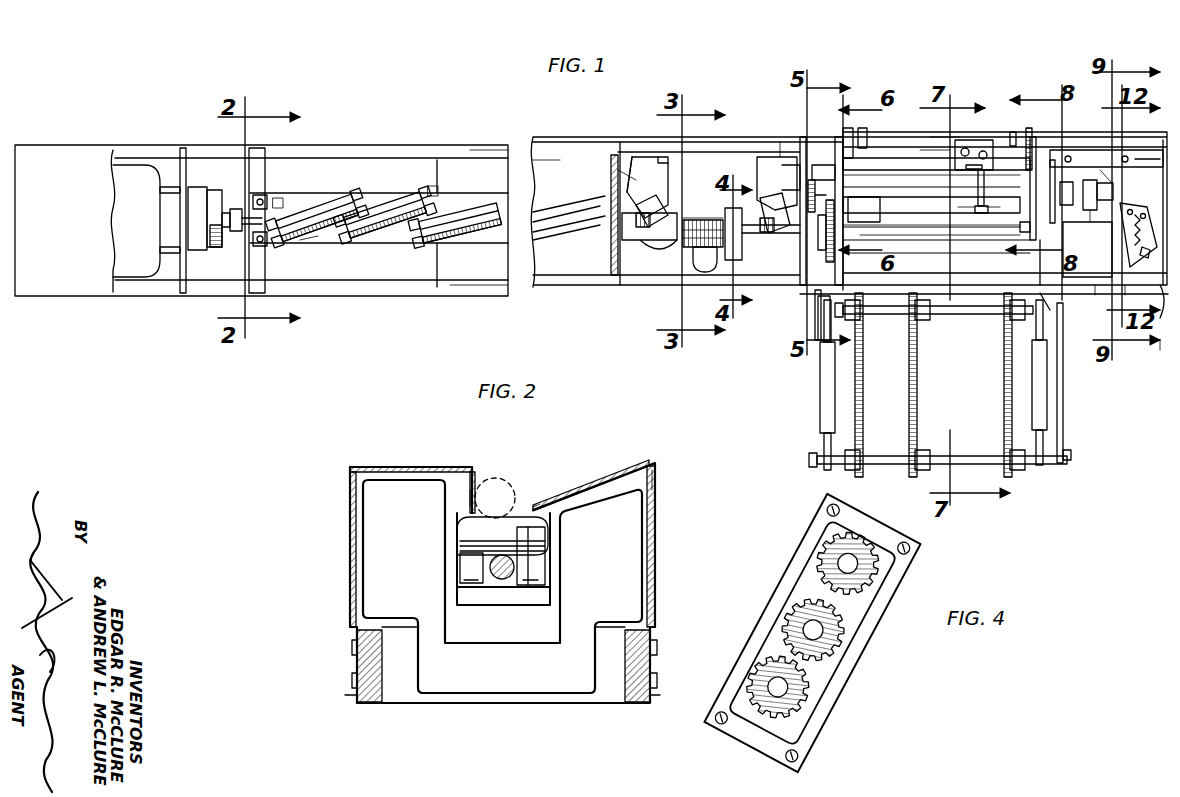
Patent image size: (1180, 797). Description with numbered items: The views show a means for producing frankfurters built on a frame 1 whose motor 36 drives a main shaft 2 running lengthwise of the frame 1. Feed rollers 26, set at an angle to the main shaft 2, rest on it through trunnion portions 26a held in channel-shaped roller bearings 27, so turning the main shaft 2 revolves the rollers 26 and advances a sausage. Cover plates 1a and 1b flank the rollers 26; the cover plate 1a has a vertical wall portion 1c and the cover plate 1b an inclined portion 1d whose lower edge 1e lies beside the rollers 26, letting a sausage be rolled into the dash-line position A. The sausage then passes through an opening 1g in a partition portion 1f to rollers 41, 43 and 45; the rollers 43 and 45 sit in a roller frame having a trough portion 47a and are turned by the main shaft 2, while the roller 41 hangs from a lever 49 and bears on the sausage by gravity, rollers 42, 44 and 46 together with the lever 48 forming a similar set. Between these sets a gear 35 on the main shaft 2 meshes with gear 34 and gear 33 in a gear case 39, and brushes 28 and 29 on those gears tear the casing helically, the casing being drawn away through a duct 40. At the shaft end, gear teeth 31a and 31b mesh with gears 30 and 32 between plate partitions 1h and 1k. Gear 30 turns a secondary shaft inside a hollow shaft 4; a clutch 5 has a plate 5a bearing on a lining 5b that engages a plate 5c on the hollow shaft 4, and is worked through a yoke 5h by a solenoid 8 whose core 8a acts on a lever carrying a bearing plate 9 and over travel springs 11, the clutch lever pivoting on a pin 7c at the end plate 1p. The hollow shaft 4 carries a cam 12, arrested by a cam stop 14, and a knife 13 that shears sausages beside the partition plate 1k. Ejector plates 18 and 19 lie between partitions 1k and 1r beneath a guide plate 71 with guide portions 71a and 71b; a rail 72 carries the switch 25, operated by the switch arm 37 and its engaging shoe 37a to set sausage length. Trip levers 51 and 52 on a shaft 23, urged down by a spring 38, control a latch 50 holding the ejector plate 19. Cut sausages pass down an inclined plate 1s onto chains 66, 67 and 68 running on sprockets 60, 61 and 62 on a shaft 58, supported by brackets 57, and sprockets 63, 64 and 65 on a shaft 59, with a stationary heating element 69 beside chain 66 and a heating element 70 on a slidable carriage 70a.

In FIG. 1, the frame 1 is at (392, 283).
In FIG. 2, the frame 1 is at (355, 667).
In FIG. 1, the cover plate 1a is at (482, 157).
In FIG. 2, the cover plate 1a is at (385, 465).
In FIG. 2, the cover plate 1b is at (645, 470).
In FIG. 2, the vertical wall portion 1c is at (470, 495).
In FIG. 1, the inclined portion 1d is at (470, 265).
In FIG. 2, the inclined portion 1d is at (575, 493).
In FIG. 2, the lower edge 1e is at (535, 510).
In FIG. 1, the partition portion 1f is at (613, 257).
In FIG. 1, the opening 1g is at (608, 182).
In FIG. 1, the plate partition 1h is at (797, 185).
In FIG. 1, the plate partition 1k is at (838, 170).
In FIG. 1, the end plate 1p is at (1162, 310).
In FIG. 1, the plate portion 1r is at (1040, 277).
In FIG. 1, the inclined plate 1s is at (952, 290).
In FIG. 1, the main shaft 2 is at (374, 217).
In FIG. 2, the main shaft 2 is at (490, 565).
In FIG. 4, the main shaft 2 is at (790, 622).
In FIG. 1, the hollow shaft 4 is at (1070, 185).
In FIG. 1, the clutch 5 is at (1088, 190).
In FIG. 1, the clutch plate 5a is at (1092, 205).
In FIG. 1, the lining 5b is at (1105, 175).
In FIG. 1, the clutch plate 5c is at (1103, 285).
In FIG. 1, the yoke 5h is at (1162, 353).
In FIG. 1, the solenoid 8 is at (1085, 235).
In FIG. 1, the core 8a is at (1127, 285).
In FIG. 1, the bearing plate 9 is at (1120, 238).
In FIG. 1, the over travel springs 11 is at (1135, 258).
In FIG. 1, the cam 12 is at (1063, 173).
In FIG. 1, the knife 13 is at (856, 135).
In FIG. 1, the cam stop 14 is at (1062, 197).
In FIG. 1, the ejector plate 18 is at (875, 160).
In FIG. 1, the ejector plate 19 is at (960, 245).
In FIG. 1, the shaft 23 is at (940, 158).
In FIG. 1, the switch 25 is at (972, 145).
In FIG. 1, the feed rollers 26 is at (395, 212).
In FIG. 2, the feed rollers 26 is at (482, 530).
In FIG. 1, the trunnion portions 26a is at (340, 243).
In FIG. 1, the roller bearings 27 is at (285, 205).
In FIG. 2, the roller bearings 27 is at (462, 558).
In FIG. 1, the brush 28 is at (690, 245).
In FIG. 1, the brush 29 is at (690, 212).
In FIG. 1, the gear 30 is at (795, 178).
In FIG. 1, the gear teeth 31a is at (808, 230).
In FIG. 1, the gear teeth 31b is at (822, 165).
In FIG. 1, the gear 32 is at (838, 248).
In FIG. 4, the gear 33 is at (873, 577).
In FIG. 4, the gear 34 is at (835, 641).
In FIG. 4, the gear 35 is at (806, 699).
In FIG. 1, the motor 36 is at (132, 275).
In FIG. 1, the switch arm 37 is at (912, 198).
In FIG. 1, the engaging shoe 37a is at (960, 207).
In FIG. 1, the spring 38 is at (1026, 150).
In FIG. 1, the gear case 39 is at (735, 265).
In FIG. 4, the gear case 39 is at (836, 633).
In FIG. 1, the duct 40 is at (717, 275).
In FIG. 1, the roller 41 is at (612, 160).
In FIG. 1, the roller 42 is at (775, 160).
In FIG. 1, the roller 43 is at (655, 245).
In FIG. 1, the roller 44 is at (743, 255).
In FIG. 1, the roller 45 is at (635, 175).
In FIG. 1, the roller 46 is at (765, 195).
In FIG. 1, the trough portion 47a is at (670, 250).
In FIG. 1, the lever 48 is at (778, 150).
In FIG. 1, the lever 49 is at (650, 170).
In FIG. 1, the latch 50 is at (1028, 230).
In FIG. 1, the trip lever 51 is at (880, 214).
In FIG. 1, the trip lever 52 is at (997, 207).
In FIG. 1, the brackets 57 is at (838, 300).
In FIG. 1, the shaft 58 is at (968, 314).
In FIG. 1, the shaft 59 is at (880, 465).
In FIG. 1, the sprocket 60 is at (858, 314).
In FIG. 1, the sprocket 61 is at (922, 314).
In FIG. 1, the sprocket 62 is at (1012, 318).
In FIG. 1, the sprocket 63 is at (862, 455).
In FIG. 1, the sprocket 64 is at (918, 455).
In FIG. 1, the sprocket 65 is at (1017, 470).
In FIG. 1, the chain 66 is at (863, 385).
In FIG. 1, the chain 67 is at (917, 385).
In FIG. 1, the chain 68 is at (1004, 385).
In FIG. 1, the heating element 69 is at (826, 405).
In FIG. 1, the heating element 70 is at (1040, 395).
In FIG. 1, the carriage 70a is at (1064, 462).
In FIG. 1, the guide plate 71 is at (930, 183).
In FIG. 1, the guide portion 71a is at (920, 232).
In FIG. 1, the guide portion 71b is at (912, 207).
In FIG. 1, the rail 72 is at (938, 153).
In FIG. 1, the pin 7c is at (1163, 150).
In FIG. 2, the dash line position A is at (505, 485).